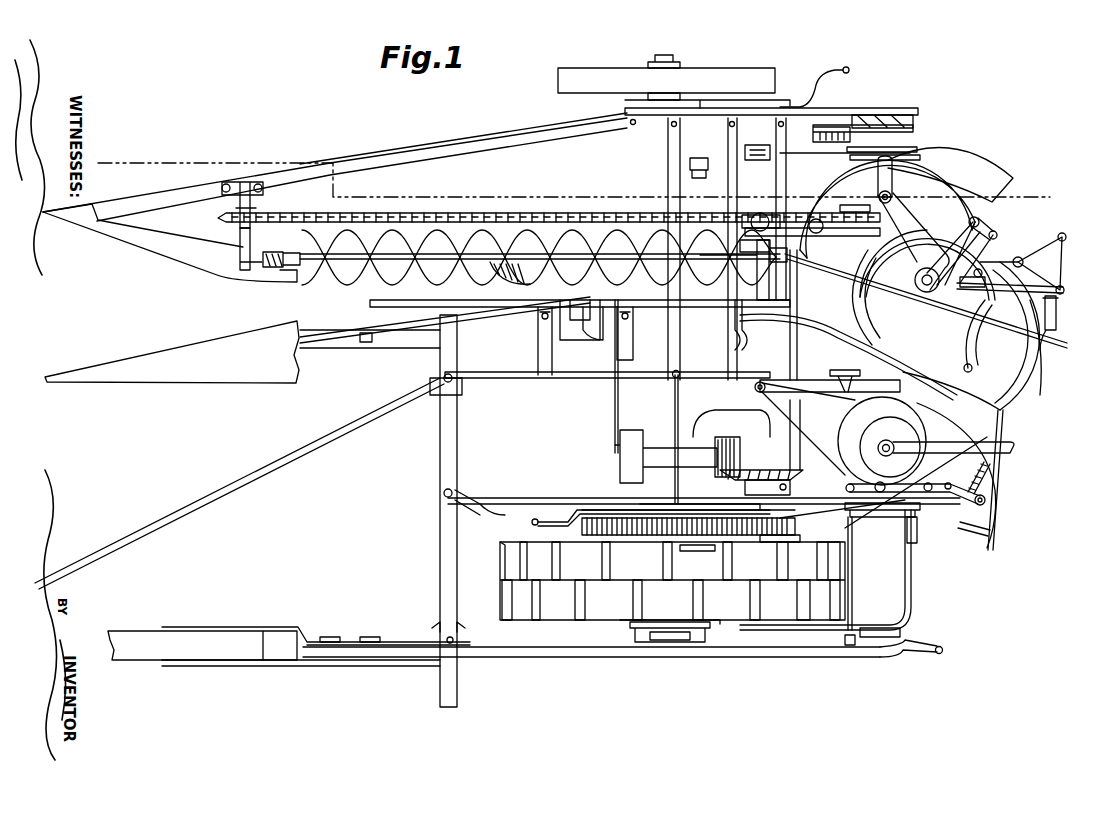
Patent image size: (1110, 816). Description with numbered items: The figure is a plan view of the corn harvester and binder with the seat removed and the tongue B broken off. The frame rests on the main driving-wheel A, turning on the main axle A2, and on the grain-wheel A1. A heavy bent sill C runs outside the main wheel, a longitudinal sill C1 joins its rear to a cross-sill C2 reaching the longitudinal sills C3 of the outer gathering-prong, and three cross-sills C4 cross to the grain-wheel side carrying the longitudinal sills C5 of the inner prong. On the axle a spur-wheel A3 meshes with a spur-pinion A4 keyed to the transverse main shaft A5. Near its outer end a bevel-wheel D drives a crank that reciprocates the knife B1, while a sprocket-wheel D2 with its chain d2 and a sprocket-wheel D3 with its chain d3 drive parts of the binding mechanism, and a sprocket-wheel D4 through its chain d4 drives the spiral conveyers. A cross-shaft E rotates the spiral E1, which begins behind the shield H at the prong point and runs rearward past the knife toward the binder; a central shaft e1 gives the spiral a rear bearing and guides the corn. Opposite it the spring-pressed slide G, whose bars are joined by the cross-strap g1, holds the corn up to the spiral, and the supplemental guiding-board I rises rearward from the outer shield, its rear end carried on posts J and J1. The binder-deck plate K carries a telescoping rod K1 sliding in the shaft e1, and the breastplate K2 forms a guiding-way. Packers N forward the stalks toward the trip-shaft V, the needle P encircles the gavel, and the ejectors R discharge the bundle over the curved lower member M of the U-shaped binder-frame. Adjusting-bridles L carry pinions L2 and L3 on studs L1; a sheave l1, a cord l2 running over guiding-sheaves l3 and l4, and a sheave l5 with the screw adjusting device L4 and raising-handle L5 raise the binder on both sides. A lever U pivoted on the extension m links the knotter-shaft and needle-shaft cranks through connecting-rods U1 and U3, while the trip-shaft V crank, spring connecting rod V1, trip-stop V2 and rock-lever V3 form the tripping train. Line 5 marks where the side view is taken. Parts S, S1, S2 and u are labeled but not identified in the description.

The section line 5 is at (116, 172).
The shield H is at (335, 200).
The cross-shaft E is at (248, 202).
The spiral E1 is at (372, 270).
The chain d4 is at (614, 222).
The central shaft e1 is at (432, 260).
The longitudinal sills C5 is at (492, 150).
The grain-wheel A1 is at (726, 70).
The adjusting-bridles L is at (882, 132).
The studs L1 is at (905, 143).
The pinion L2 is at (907, 164).
The needle P is at (971, 170).
The cross-sills C4 is at (677, 155).
The guiding-sheave l3 is at (702, 173).
The cord l2 is at (840, 512).
The sheave l1 is at (858, 152).
The sprocket-wheel D4 is at (760, 218).
The sprocket-wheel D3 is at (816, 224).
The chain d3 is at (860, 212).
The post J is at (704, 258).
The post J1 is at (730, 350).
The longitudinal sills C3 is at (490, 320).
The spring-pressed slide G is at (480, 307).
The cross-strap g1 is at (377, 335).
The knife B1 is at (600, 300).
The supplemental guiding-board I is at (262, 383).
The cross-sill C2 is at (448, 461).
The longitudinal sill C1 is at (534, 500).
The raising-handle L5 is at (532, 523).
The sprocket-wheel D2 is at (745, 393).
The main shaft A5 is at (768, 453).
The bevel-wheel D is at (795, 472).
The spur-wheel A3 is at (605, 530).
The main driving-wheel A is at (672, 581).
The guiding-sheave l4 is at (697, 555).
The spur-pinion A4 is at (783, 530).
The main axle A2 is at (668, 642).
The pinion L3 is at (887, 518).
The adjusting device L4 is at (917, 500).
The sheave l5 is at (859, 515).
The tongue B is at (525, 633).
The bent sill C is at (910, 613).
The plate K is at (818, 264).
The telescoping rod K1 is at (778, 262).
The breastplate K2 is at (852, 342).
The packers N is at (864, 312).
The trip-shaft V is at (924, 298).
The extension m is at (1008, 278).
The lever U is at (1047, 258).
The connecting-rod U3 is at (1062, 323).
The link u is at (963, 359).
The adjustable connecting-rod U1 is at (1040, 340).
The lower horizontal member M is at (1012, 377).
The spring connecting rod V1 is at (998, 424).
The wheel S is at (925, 425).
The hub S1 is at (880, 452).
The ejectors R is at (998, 454).
The arm S2 is at (850, 484).
The trip-stop V2 is at (990, 504).
The rock-lever V3 is at (950, 490).
The chain d2 is at (822, 386).